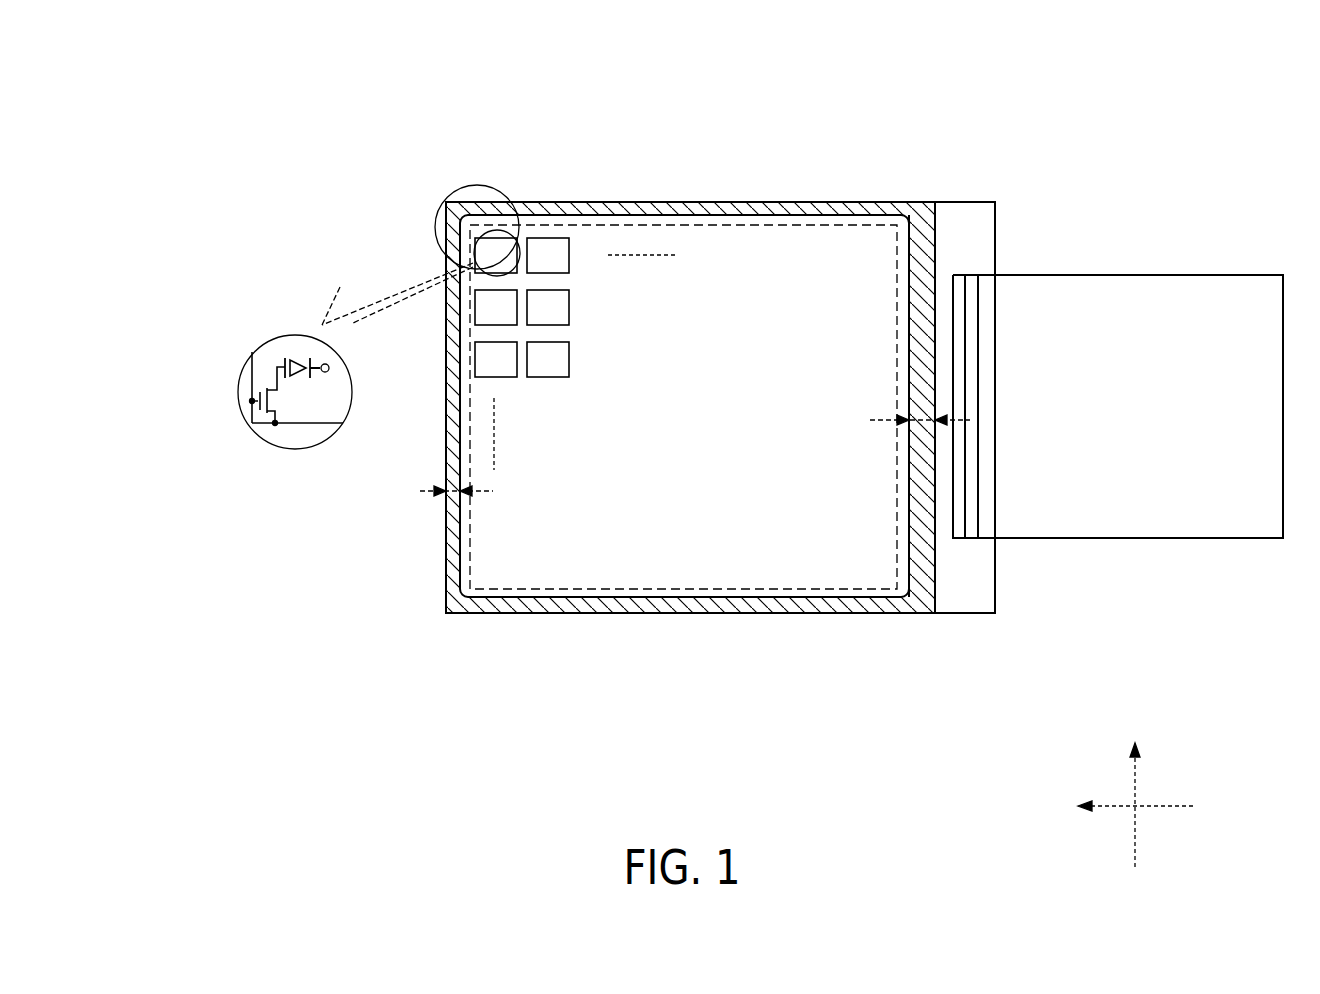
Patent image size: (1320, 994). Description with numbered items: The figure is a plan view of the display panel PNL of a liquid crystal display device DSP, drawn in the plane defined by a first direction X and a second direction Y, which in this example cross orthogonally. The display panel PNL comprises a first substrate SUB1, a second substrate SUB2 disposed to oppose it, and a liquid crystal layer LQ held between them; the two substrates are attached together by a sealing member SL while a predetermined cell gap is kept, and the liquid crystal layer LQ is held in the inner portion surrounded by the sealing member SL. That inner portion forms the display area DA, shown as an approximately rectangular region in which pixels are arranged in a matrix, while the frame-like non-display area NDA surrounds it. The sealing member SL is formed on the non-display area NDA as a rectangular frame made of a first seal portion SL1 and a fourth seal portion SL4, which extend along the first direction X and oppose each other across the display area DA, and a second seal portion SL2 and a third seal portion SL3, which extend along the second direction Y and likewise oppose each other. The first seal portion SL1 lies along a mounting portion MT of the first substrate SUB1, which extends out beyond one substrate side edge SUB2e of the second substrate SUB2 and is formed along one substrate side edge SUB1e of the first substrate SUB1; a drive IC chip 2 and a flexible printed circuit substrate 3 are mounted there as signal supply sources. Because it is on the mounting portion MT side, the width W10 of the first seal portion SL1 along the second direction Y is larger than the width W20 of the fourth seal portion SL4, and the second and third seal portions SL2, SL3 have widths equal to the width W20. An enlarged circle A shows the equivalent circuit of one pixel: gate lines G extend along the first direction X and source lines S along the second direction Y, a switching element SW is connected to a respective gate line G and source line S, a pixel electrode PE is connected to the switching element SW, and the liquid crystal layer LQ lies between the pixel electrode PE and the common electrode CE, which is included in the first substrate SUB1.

The display device DSP is at (820, 385).
The display panel PNL is at (820, 385).
The first substrate SUB1 is at (957, 595).
The second substrate SUB2 is at (852, 572).
The substrate side edge of the first substrate SUB1e is at (995, 256).
The substrate side edge of the second substrate SUB2e is at (940, 222).
The sealing member SL is at (742, 198).
The first seal portion SL1 is at (918, 473).
The second seal portion SL2 is at (706, 613).
The third seal portion SL3 is at (790, 206).
The fourth seal portion SL4 is at (446, 575).
The display area DA is at (791, 598).
The non-display area NDA is at (902, 572).
The width of the first seal portion W10 is at (893, 418).
The width of the fourth seal portion W20 is at (445, 488).
The mounting portion MT is at (972, 543).
The drive IC chip 2 is at (968, 270).
The flexible printed circuit substrate 3 is at (1220, 274).
The enlarged area A is at (447, 193).
The pixel electrode PE is at (283, 367).
The liquid crystal layer LQ is at (309, 333).
The common electrode CE is at (333, 373).
The switching element SW is at (280, 398).
The gate line G is at (252, 378).
The source line S is at (300, 423).
The first direction X is at (1134, 791).
The second direction Y is at (1125, 806).